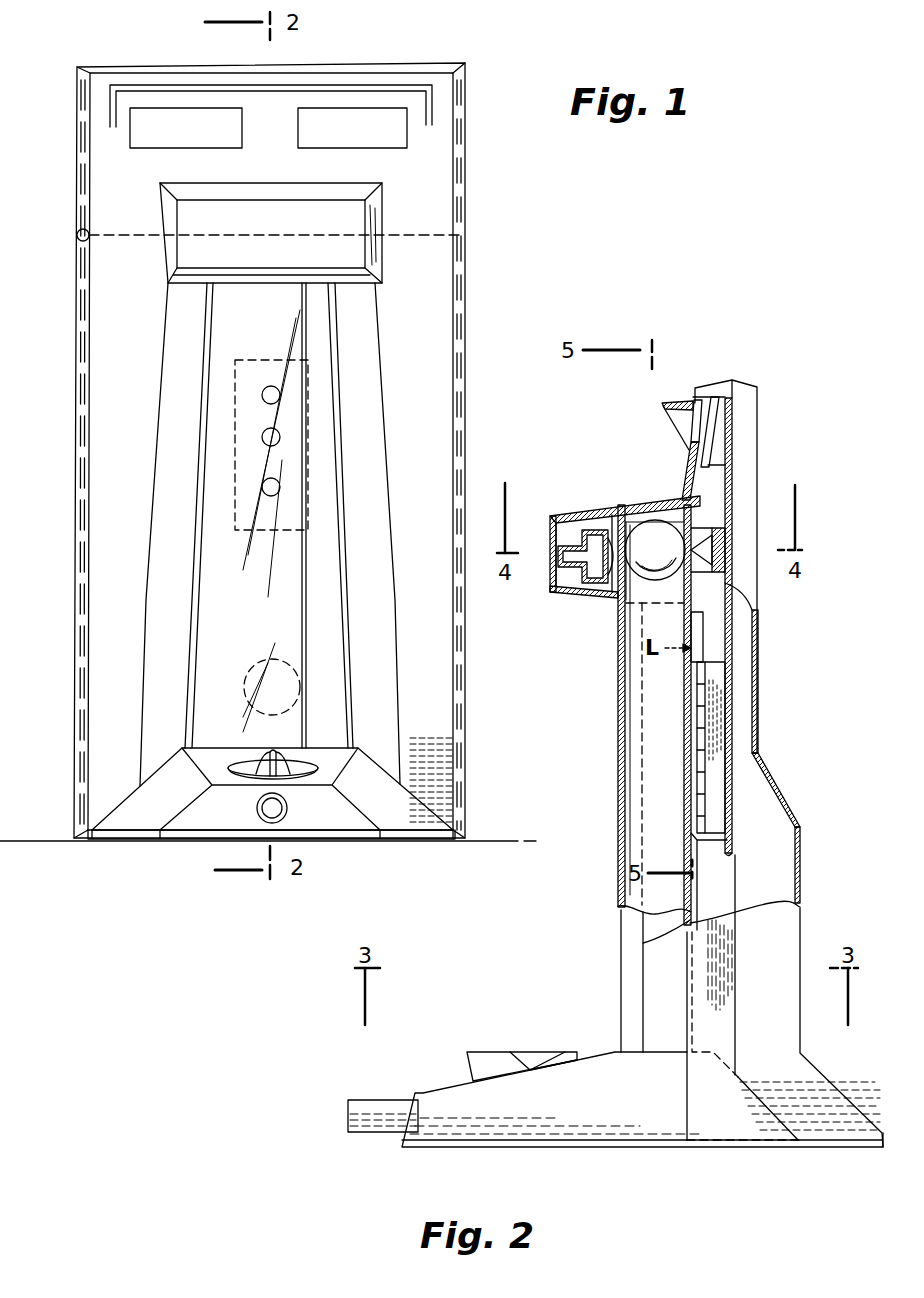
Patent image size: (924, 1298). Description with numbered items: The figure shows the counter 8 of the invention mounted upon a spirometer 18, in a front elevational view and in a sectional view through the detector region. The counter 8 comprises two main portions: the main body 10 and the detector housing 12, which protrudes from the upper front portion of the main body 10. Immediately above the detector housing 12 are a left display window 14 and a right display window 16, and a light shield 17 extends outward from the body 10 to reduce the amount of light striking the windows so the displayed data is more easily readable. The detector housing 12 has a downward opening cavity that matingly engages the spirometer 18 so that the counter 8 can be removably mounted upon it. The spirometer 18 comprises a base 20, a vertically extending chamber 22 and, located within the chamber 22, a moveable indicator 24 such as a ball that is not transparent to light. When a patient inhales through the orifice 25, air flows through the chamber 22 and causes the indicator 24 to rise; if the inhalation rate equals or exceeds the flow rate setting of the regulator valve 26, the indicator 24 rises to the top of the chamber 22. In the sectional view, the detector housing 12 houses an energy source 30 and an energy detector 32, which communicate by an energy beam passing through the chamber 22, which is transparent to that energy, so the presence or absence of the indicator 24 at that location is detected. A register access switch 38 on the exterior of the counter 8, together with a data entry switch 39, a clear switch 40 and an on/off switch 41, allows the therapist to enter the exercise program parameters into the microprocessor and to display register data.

In FIG. 1, the counter 8 is at (468, 84).
In FIG. 2, the counter 8 is at (759, 700).
In FIG. 1, the main body 10 is at (432, 252).
In FIG. 2, the main body 10 is at (745, 406).
In FIG. 1, the detector housing 12 is at (200, 242).
In FIG. 2, the detector housing 12 is at (572, 593).
In FIG. 1, the left display window 14 is at (167, 125).
In FIG. 1, the right display window 16 is at (383, 118).
In FIG. 1, the light shield 17 is at (348, 88).
In FIG. 1, the spirometer 18 is at (400, 841).
In FIG. 2, the spirometer 18 is at (617, 798).
In FIG. 1, the base 20 is at (208, 770).
In FIG. 2, the base 20 is at (608, 1127).
In FIG. 1, the chamber 22 is at (272, 318).
In FIG. 2, the chamber 22 is at (617, 728).
In FIG. 1, the moveable indicator 24 is at (245, 688).
In FIG. 2, the moveable indicator 24 is at (652, 535).
In FIG. 1, the orifice 25 is at (254, 812).
In FIG. 2, the orifice 25 is at (382, 1101).
In FIG. 1, the regulator valve 26 is at (297, 766).
In FIG. 2, the regulator valve 26 is at (488, 1052).
In FIG. 2, the energy source 30 is at (712, 543).
In FIG. 2, the energy detector 32 is at (595, 530).
In FIG. 1, the register access switch 38 is at (77, 236).
In FIG. 1, the data entry switch 39 is at (281, 395).
In FIG. 1, the clear switch 40 is at (281, 437).
In FIG. 1, the on/off switch 41 is at (281, 487).